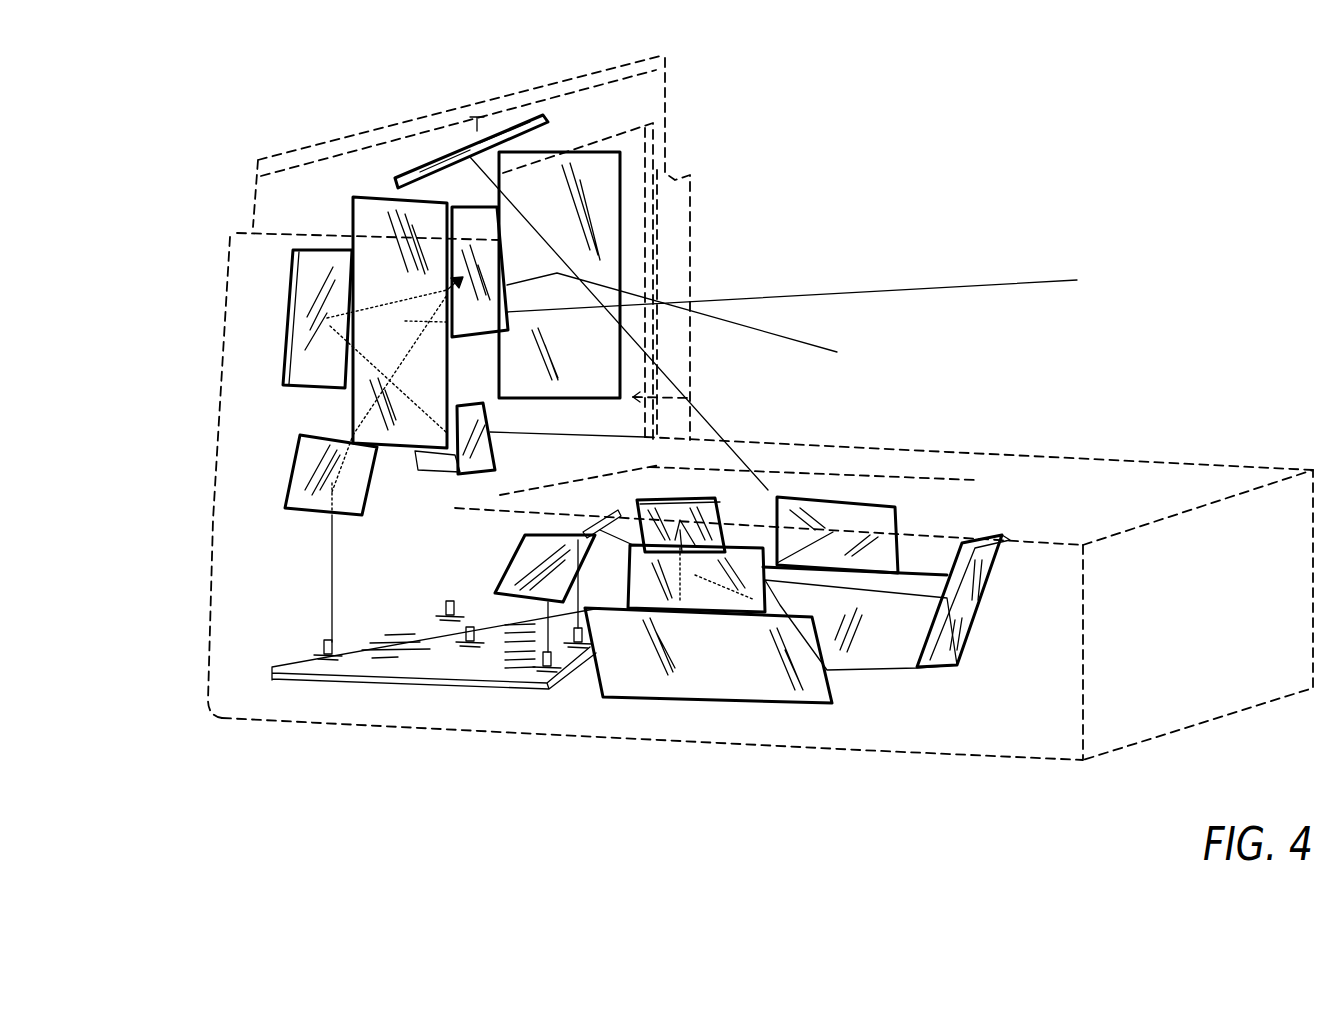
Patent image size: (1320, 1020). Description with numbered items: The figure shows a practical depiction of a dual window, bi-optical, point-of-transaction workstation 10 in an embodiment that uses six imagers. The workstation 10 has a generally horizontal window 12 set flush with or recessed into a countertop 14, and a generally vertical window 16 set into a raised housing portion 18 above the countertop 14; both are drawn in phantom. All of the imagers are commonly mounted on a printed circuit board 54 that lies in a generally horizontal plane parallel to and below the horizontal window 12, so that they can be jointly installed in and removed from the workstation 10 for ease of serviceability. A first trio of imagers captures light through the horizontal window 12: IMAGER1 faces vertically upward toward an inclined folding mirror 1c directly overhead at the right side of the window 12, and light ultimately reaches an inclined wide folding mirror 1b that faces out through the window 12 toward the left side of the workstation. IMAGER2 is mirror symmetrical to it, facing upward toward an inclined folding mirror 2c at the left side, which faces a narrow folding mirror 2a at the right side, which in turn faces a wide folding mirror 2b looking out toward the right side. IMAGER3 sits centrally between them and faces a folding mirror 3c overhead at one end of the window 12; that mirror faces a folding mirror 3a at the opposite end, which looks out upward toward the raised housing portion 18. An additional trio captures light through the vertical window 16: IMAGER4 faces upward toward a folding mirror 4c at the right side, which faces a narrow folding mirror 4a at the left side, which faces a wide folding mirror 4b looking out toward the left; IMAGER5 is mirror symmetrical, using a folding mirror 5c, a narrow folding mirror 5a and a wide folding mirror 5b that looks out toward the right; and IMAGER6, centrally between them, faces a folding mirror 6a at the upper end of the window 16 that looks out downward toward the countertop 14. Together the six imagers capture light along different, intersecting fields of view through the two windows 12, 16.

The point-of-transaction workstation 10 is at (877, 233).
The generally horizontal window 12 is at (957, 460).
The countertop 14 is at (1195, 462).
The generally vertical window 16 is at (697, 395).
The raised housing portion 18 is at (250, 228).
The printed circuit board 54 is at (427, 680).
The inclined wide folding mirror 1b is at (900, 637).
The inclined folding mirror 1c is at (657, 500).
The inclined narrow folding mirror 2a is at (873, 525).
The inclined wide folding mirror 2b is at (707, 692).
The inclined folding mirror 2c is at (540, 548).
The inclined folding mirror 3a is at (965, 588).
The inclined folding mirror 3c is at (620, 513).
The inclined narrow folding mirror 4a is at (305, 337).
The inclined wide folding mirror 4b is at (620, 248).
The inclined folding mirror 4c is at (437, 476).
The inclined narrow folding mirror 5a is at (503, 227).
The inclined wide folding mirror 5b is at (373, 215).
The inclined folding mirror 5c is at (292, 490).
The inclined folding mirror 6a is at (453, 155).
The imager 1 IMAGER1 is at (680, 612).
The imager 2 IMAGER2 is at (524, 695).
The imager 3 IMAGER3 is at (582, 665).
The imager 4 IMAGER4 is at (450, 601).
The imager 5 IMAGER5 is at (309, 642).
The imager 6 IMAGER6 is at (434, 657).